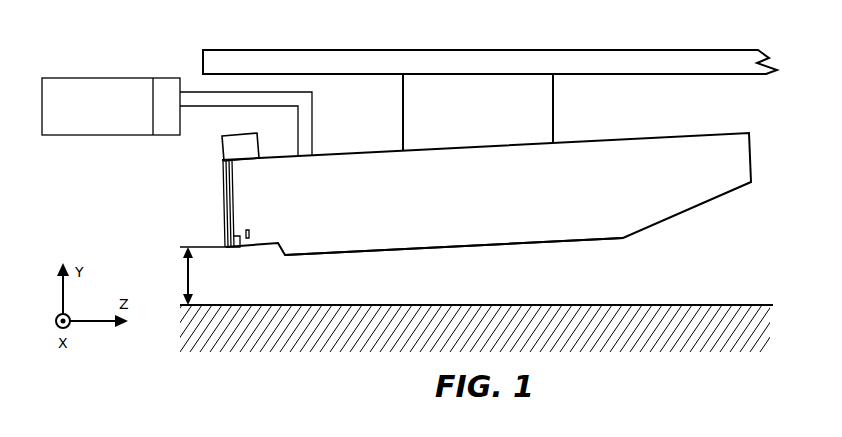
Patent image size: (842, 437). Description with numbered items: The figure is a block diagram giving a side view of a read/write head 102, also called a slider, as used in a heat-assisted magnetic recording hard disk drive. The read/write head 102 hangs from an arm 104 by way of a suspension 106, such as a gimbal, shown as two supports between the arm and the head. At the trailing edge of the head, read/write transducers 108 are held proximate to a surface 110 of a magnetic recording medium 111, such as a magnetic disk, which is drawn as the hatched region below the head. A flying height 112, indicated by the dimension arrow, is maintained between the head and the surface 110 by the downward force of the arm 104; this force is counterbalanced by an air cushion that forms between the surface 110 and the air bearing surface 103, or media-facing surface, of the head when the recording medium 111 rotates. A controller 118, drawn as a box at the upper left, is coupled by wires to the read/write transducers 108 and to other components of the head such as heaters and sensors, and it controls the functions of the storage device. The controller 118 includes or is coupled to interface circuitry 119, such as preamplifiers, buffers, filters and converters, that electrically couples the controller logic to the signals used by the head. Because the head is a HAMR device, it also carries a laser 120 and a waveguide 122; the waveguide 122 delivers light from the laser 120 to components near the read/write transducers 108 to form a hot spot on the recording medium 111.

The read/write head 102 is at (660, 141).
The air bearing surface 103 is at (366, 252).
The arm 104 is at (705, 56).
The suspension 106 is at (553, 104).
The read/write transducers 108 is at (226, 233).
The surface 110 is at (664, 303).
The magnetic recording medium 111 is at (676, 341).
The flying height 112 is at (188, 276).
The controller 118 is at (93, 78).
The interface circuitry 119 is at (163, 78).
The laser 120 is at (240, 141).
The waveguide 122 is at (225, 178).